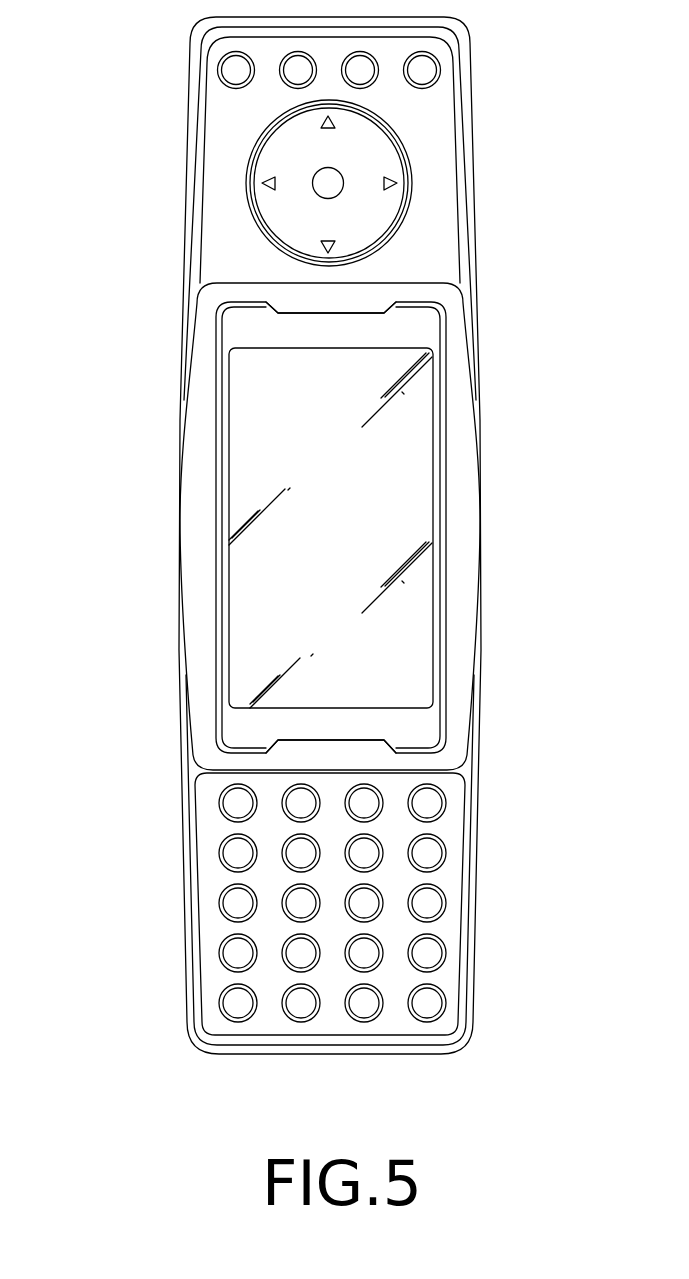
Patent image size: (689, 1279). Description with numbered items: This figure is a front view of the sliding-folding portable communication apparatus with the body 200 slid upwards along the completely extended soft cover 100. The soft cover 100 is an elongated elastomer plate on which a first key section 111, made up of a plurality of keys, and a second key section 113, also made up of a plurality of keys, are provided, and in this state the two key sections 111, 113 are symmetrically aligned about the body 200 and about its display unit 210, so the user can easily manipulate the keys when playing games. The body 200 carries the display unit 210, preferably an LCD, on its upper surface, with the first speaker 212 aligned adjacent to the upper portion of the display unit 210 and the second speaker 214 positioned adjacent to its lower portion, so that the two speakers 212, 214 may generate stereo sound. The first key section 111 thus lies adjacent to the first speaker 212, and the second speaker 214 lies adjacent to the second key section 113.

The soft cover 100 is at (162, 905).
The body 200 is at (162, 521).
The first key section 111 is at (427, 70).
The second key section 113 is at (428, 857).
The display unit 210 is at (408, 487).
The first speaker 212 is at (370, 306).
The second speaker 214 is at (375, 742).